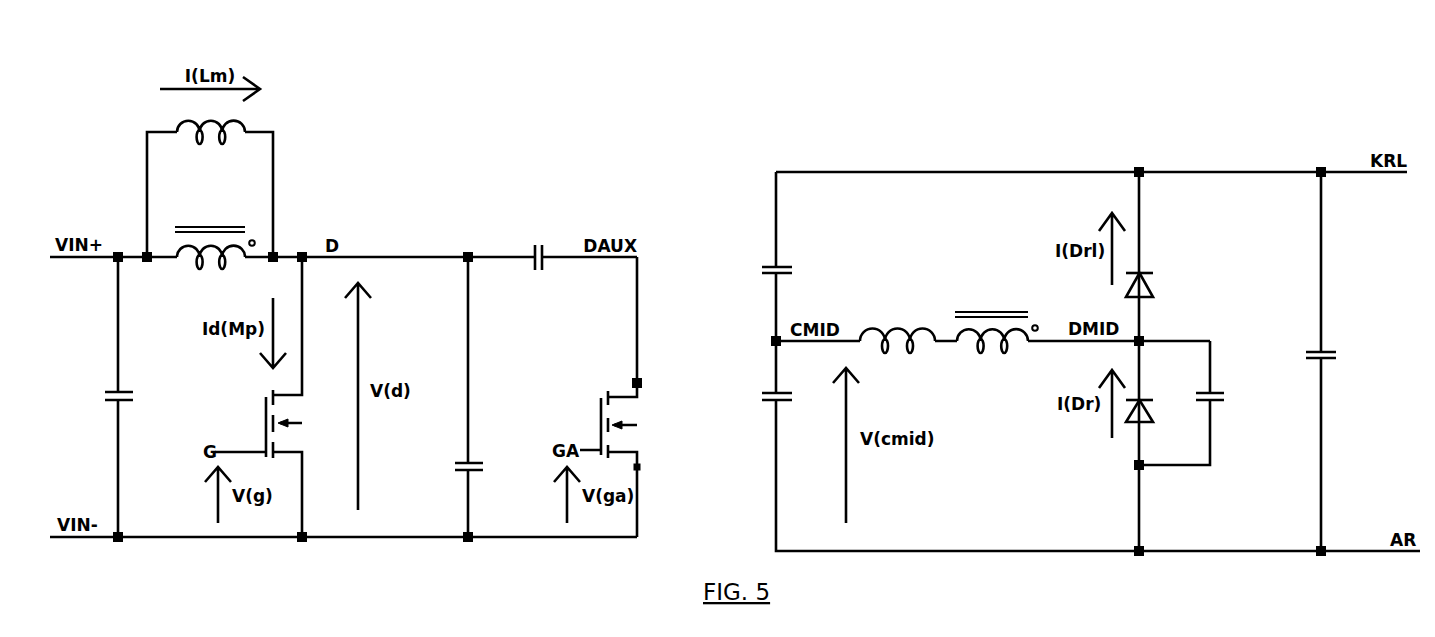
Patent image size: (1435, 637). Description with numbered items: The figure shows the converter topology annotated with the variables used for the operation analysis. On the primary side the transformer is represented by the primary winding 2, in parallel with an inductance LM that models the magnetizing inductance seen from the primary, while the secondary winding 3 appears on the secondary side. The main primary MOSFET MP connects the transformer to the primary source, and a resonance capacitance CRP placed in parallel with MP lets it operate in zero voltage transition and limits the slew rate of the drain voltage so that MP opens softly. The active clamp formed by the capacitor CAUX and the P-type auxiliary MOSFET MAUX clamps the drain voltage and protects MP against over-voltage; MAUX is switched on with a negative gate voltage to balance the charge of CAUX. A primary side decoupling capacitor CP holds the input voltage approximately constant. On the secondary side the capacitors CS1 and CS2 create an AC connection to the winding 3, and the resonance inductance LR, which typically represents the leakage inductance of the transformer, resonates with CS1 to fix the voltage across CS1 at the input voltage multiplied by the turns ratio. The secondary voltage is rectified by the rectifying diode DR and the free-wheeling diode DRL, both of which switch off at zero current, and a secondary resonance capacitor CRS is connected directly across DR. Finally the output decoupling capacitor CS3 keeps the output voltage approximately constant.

The primary-side transformer TFO-P 2 is at (245, 215).
The secondary-side transformer TFO-S 3 is at (1028, 299).
The primary side decoupling capacitor CP is at (140, 397).
The magnetizing inductance LM is at (210, 176).
The main primary MOSFET MP is at (276, 397).
The resonance capacitance CRP is at (490, 397).
The auxiliary clamping capacitor CAUX is at (538, 258).
The auxiliary MOSFET MAUX is at (640, 397).
The secondary capacitor CS1 is at (800, 398).
The secondary capacitor CS2 is at (800, 271).
The output decoupling capacitor CS3 is at (1336, 361).
The resonance inductance LR is at (897, 339).
The free-wheeling diode DRL is at (1162, 280).
The rectifying diode DR is at (1154, 418).
The secondary resonance capacitor CRS is at (1205, 403).